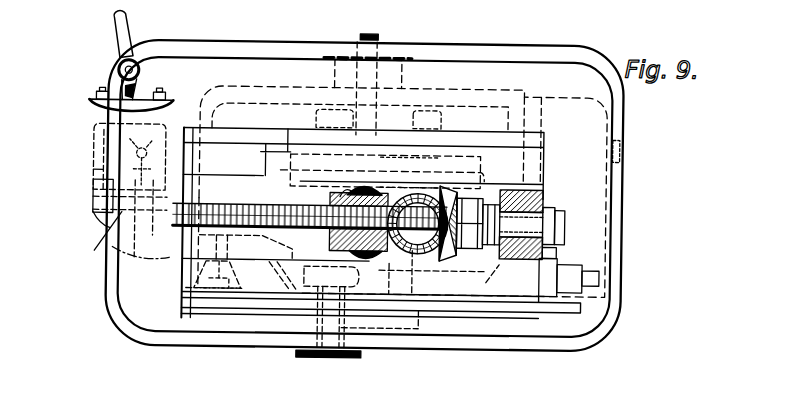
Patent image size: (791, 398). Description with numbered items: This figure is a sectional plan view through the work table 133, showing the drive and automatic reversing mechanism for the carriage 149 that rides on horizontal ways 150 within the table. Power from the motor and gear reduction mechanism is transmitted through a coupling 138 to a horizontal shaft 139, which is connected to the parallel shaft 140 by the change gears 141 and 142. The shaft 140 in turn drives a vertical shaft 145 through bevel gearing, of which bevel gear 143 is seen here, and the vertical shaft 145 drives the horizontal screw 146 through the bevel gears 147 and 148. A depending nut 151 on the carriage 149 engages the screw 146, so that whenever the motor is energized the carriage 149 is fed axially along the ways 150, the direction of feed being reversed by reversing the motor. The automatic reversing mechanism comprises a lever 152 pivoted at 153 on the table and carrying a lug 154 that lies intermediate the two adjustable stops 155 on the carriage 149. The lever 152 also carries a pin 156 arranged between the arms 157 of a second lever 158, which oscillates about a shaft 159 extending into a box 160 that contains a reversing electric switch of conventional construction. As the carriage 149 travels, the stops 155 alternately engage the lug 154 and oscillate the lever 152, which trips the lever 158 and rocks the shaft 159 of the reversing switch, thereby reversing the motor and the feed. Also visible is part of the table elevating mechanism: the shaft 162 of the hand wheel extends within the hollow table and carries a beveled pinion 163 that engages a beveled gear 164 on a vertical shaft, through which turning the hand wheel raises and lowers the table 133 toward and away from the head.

The work table 133 is at (203, 349).
The coupling 138 is at (320, 355).
The horizontal shaft 139 is at (327, 246).
The parallel shaft 140 is at (488, 141).
The change gear 141 is at (310, 131).
The change gear 142 is at (452, 136).
The bevel gear 143 is at (452, 176).
The vertical shaft 145 is at (443, 267).
The horizontal screw 146 is at (218, 215).
The bevel gear 147 is at (398, 255).
The bevel gear 148 is at (542, 195).
The carriage 149 is at (90, 106).
The horizontal ways 150 is at (208, 150).
The depending nut 151 is at (340, 197).
The lever 152 is at (121, 20).
The pivot 153 is at (116, 73).
The lug 154 is at (140, 86).
The adjustable stops 155 is at (117, 114).
The pin 156 is at (115, 154).
The arms 157 is at (92, 182).
The lever 158 is at (135, 261).
The shaft 159 is at (98, 242).
The box 160 is at (95, 146).
The shaft 162 is at (374, 40).
The beveled pinion 163 is at (373, 178).
The beveled gear 164 is at (368, 254).